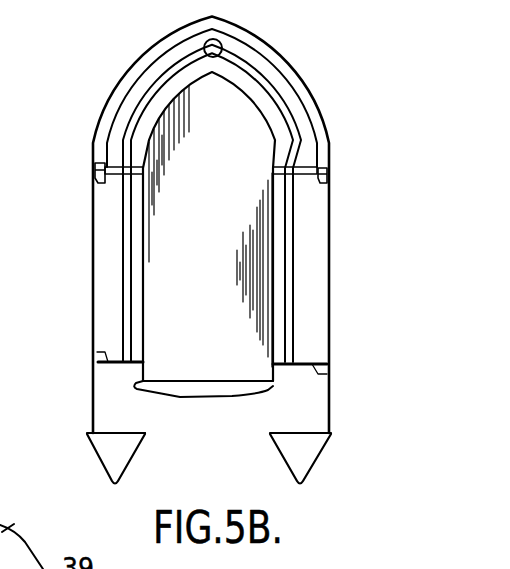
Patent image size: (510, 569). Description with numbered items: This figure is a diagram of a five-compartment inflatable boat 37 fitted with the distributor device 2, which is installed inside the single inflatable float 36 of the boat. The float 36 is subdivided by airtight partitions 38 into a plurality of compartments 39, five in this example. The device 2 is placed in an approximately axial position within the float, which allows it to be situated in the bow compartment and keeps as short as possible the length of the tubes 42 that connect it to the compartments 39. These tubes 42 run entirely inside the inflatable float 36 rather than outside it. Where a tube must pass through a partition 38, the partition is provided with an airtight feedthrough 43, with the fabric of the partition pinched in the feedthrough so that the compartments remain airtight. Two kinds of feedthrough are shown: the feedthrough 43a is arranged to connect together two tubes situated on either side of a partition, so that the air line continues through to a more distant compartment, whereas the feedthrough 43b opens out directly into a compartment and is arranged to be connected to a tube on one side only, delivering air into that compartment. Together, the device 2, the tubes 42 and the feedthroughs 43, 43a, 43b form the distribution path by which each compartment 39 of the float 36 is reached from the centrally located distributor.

The distributor device 2 is at (222, 44).
The inflatable float 36 is at (118, 232).
The boat 37 is at (107, 111).
The airtight partitions 38 is at (98, 182).
The compartments 39 is at (158, 65).
The tubes 42 is at (282, 84).
The airtight feedthroughs 43 is at (124, 365).
The feedthrough 43a is at (132, 167).
The feedthrough 43b is at (99, 166).